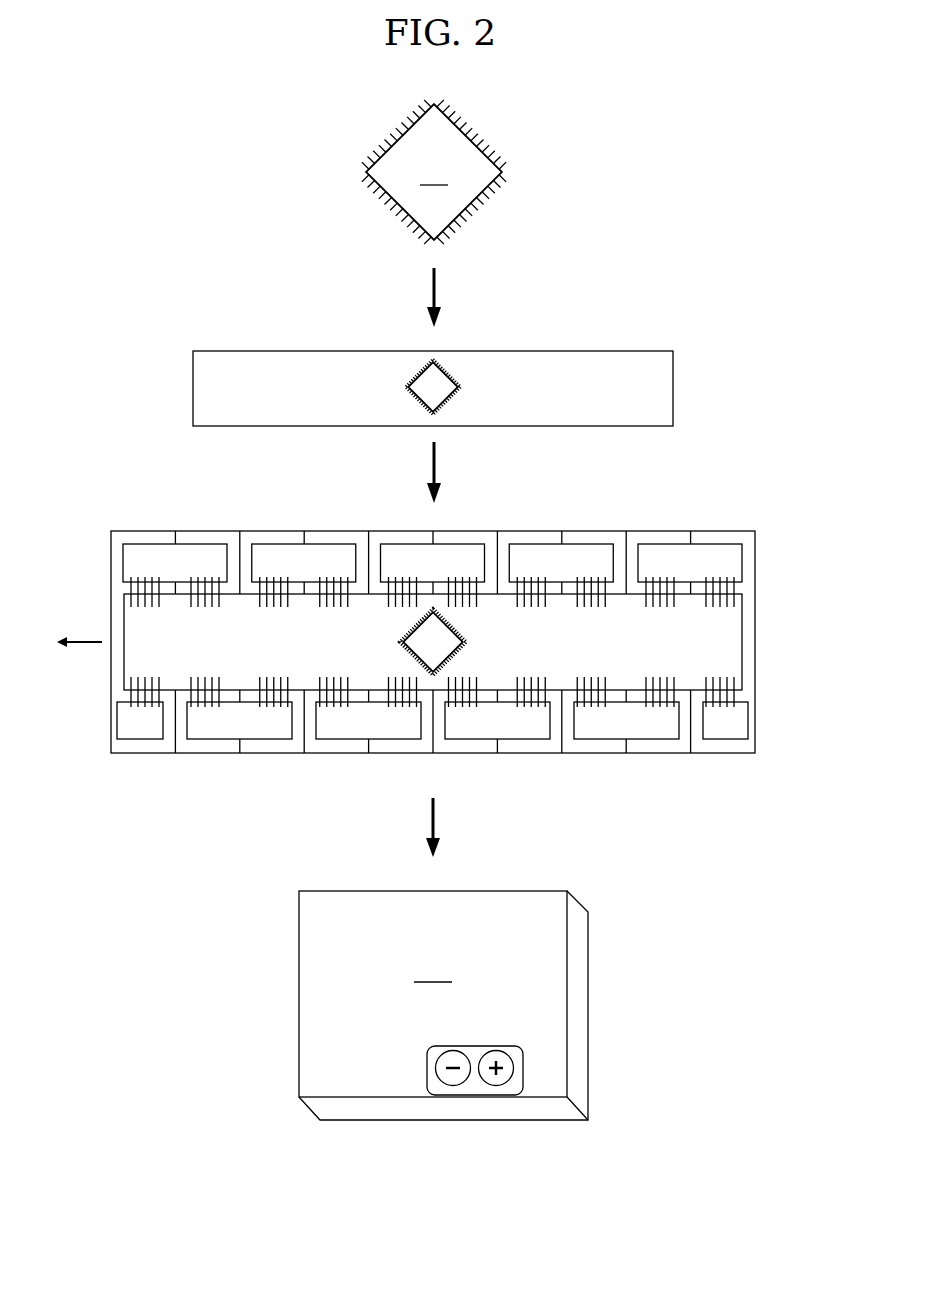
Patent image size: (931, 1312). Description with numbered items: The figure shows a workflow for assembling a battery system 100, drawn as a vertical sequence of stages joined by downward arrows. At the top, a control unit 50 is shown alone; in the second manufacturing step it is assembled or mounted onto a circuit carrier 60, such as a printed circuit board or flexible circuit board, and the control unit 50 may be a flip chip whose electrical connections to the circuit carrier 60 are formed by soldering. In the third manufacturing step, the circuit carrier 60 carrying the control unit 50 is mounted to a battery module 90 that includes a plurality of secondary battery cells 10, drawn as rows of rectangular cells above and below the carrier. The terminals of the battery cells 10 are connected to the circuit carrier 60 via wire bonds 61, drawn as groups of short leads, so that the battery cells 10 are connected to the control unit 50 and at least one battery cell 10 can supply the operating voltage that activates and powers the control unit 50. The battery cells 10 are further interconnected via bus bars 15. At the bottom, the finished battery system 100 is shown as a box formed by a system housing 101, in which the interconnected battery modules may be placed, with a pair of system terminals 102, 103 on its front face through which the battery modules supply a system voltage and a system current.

The secondary battery cell 10 is at (141, 530).
The bus bar 15 is at (262, 728).
The control unit 50 is at (428, 386).
The circuit carrier 60 is at (591, 360).
The wire bond 61 is at (352, 695).
The battery module 90 is at (757, 688).
The battery system 100 is at (443, 1006).
The system housing 101 is at (480, 890).
The system terminal 102 is at (453, 1087).
The system terminal 103 is at (496, 1087).